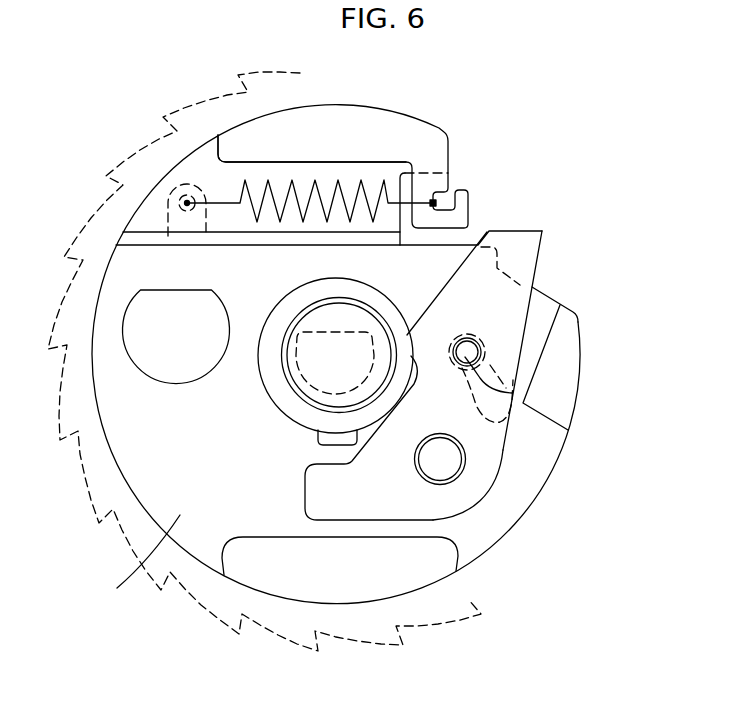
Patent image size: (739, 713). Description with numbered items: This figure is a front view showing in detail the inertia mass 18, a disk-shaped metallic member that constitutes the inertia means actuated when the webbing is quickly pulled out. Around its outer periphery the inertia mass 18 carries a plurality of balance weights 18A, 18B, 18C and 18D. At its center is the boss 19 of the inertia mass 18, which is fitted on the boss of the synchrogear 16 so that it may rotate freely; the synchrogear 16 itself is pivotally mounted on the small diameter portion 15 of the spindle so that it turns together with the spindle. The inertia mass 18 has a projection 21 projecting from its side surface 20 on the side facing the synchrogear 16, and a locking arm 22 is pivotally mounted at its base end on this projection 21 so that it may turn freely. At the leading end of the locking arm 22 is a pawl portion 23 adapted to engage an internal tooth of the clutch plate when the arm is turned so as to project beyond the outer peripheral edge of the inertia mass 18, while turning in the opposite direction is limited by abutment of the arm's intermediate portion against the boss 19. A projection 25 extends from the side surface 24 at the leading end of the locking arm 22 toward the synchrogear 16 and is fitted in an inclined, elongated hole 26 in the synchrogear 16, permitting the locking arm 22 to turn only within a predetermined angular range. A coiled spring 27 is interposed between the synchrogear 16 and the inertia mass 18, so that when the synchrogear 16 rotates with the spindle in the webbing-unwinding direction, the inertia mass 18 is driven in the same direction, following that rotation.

The small diameter portion 15 is at (297, 338).
The synchrogear 16 is at (447, 622).
The inertia mass 18 is at (547, 447).
The balance weight 18A is at (360, 118).
The balance weight 18B is at (174, 372).
The balance weight 18C is at (342, 583).
The balance weight 18D is at (572, 360).
The boss 19 is at (280, 400).
The side surface 20 is at (117, 588).
The projection 21 is at (447, 470).
The locking arm 22 is at (488, 445).
The pawl portion 23 is at (540, 243).
The side surface 24 is at (442, 312).
The projection 25 is at (512, 393).
The inclined elongated hole 26 is at (481, 346).
The coiled spring 27 is at (400, 177).